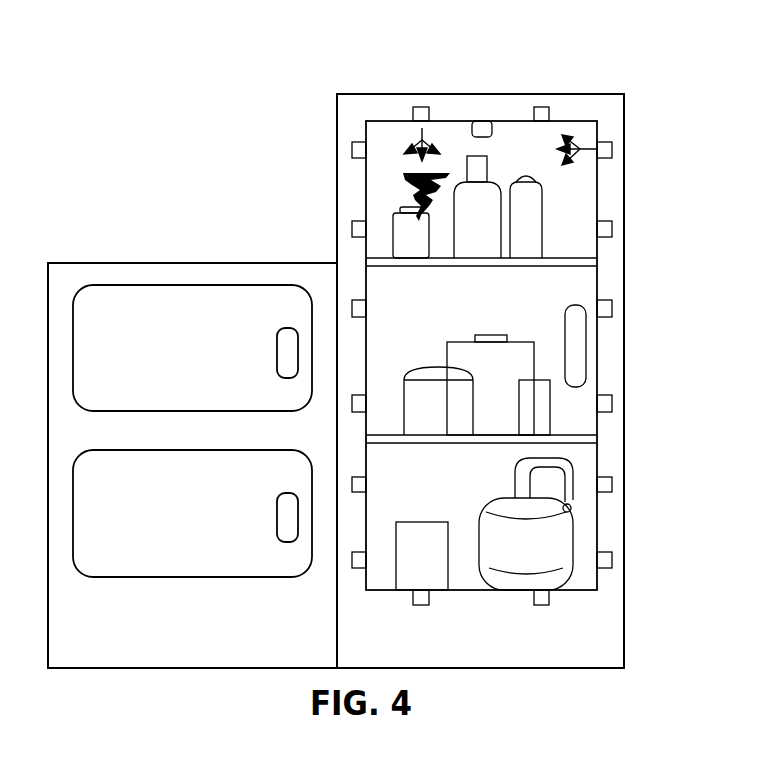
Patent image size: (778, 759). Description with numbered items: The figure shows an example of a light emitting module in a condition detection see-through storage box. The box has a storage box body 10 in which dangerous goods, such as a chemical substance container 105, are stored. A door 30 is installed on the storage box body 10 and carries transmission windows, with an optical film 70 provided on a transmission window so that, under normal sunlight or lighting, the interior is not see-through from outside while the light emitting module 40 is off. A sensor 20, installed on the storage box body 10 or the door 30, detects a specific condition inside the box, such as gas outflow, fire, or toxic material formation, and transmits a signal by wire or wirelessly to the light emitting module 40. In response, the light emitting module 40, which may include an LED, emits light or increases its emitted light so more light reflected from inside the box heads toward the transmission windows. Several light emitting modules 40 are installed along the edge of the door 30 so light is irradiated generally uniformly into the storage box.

The storage box body 10 is at (573, 94).
The sensor 20 is at (479, 121).
The door 30 is at (597, 286).
The light emitting module 40 is at (612, 150).
The optical film 70 is at (583, 248).
The chemical substance container 105 is at (393, 227).